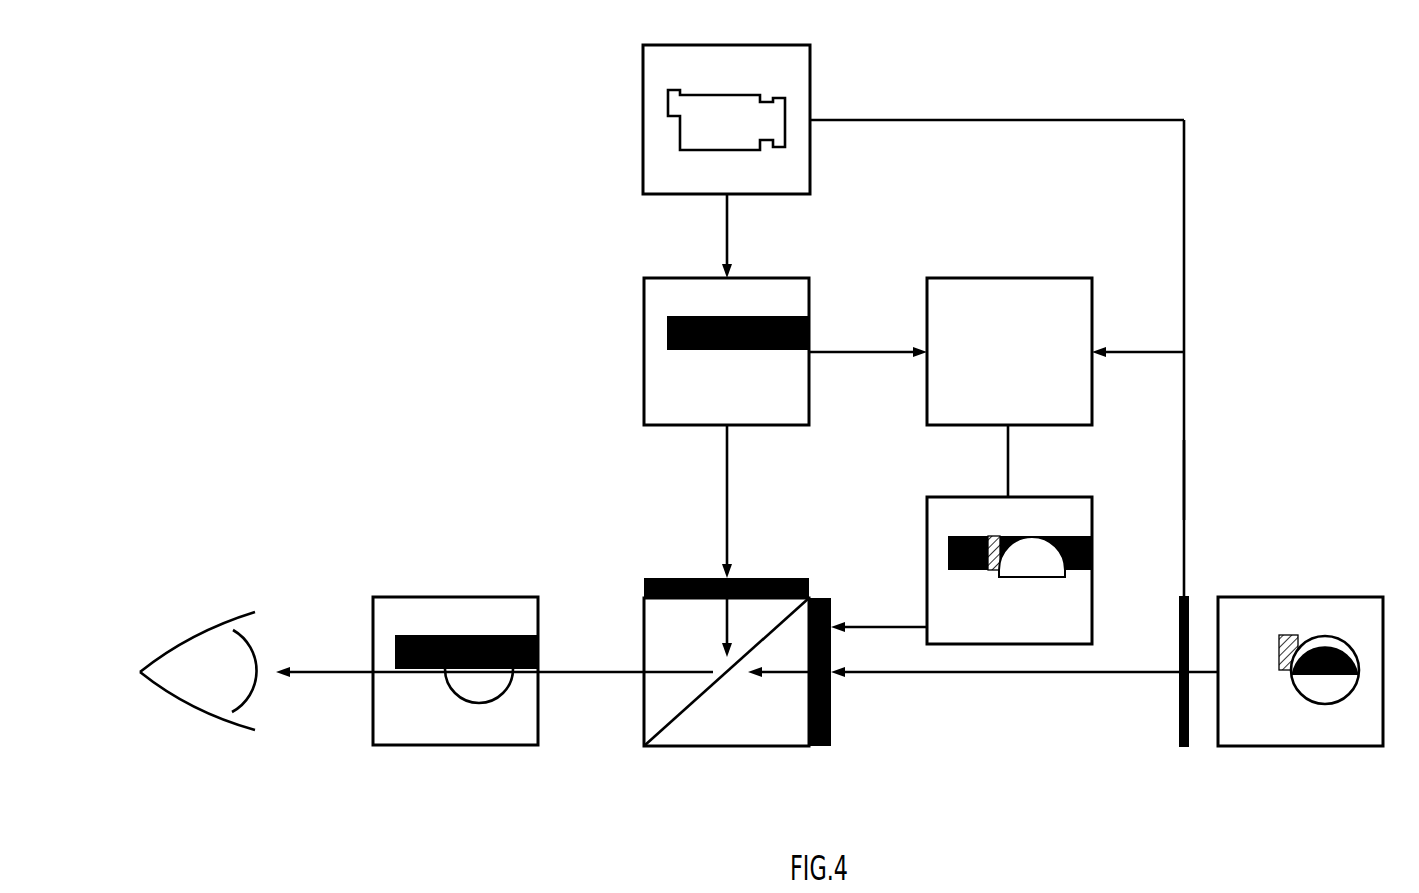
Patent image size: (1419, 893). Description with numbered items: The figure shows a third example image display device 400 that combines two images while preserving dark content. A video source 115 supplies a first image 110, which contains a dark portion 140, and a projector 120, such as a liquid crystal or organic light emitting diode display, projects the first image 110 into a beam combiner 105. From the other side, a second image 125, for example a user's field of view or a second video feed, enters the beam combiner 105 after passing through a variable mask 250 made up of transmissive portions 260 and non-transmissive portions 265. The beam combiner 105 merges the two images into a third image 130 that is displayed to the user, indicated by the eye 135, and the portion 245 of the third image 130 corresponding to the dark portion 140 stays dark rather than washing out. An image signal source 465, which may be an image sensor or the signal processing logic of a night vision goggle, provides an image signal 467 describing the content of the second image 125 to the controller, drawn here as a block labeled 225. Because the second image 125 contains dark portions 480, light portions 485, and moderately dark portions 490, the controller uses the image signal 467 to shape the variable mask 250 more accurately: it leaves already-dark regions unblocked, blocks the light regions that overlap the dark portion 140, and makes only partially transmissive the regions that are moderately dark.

The image display device 400 is at (1247, 185).
The video source 115 is at (810, 107).
The first image 110 is at (809, 333).
The dark portion 140 is at (667, 333).
The display controller 225 is at (1092, 310).
The transmissive portions 260 is at (1092, 578).
The non-transmissive portions 265 is at (948, 552).
The variable mask 250 is at (831, 707).
The beam combiner 105 is at (765, 746).
The projector 120 is at (780, 578).
The third image 130 is at (450, 745).
The portion of third image 245 is at (423, 635).
The eye 135 is at (200, 648).
The image signal source 465 is at (1179, 628).
The image signal 467 is at (1184, 478).
The second image 125 is at (1322, 746).
The light portions 485 is at (1258, 613).
The moderately dark portions 490 is at (1300, 640).
The dark portions 480 is at (1335, 637).